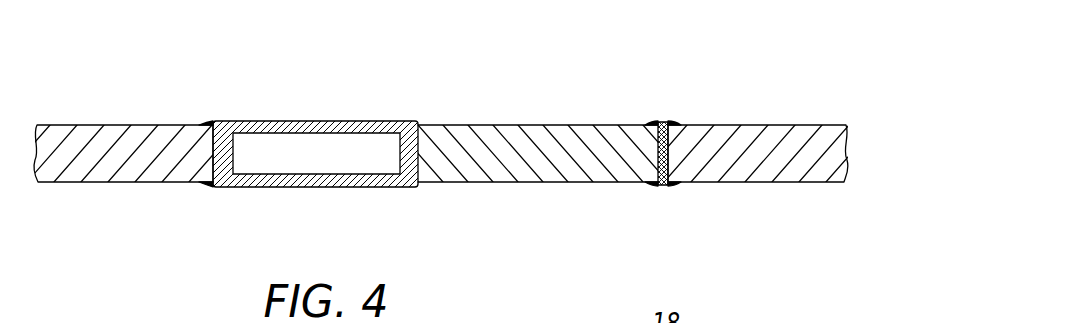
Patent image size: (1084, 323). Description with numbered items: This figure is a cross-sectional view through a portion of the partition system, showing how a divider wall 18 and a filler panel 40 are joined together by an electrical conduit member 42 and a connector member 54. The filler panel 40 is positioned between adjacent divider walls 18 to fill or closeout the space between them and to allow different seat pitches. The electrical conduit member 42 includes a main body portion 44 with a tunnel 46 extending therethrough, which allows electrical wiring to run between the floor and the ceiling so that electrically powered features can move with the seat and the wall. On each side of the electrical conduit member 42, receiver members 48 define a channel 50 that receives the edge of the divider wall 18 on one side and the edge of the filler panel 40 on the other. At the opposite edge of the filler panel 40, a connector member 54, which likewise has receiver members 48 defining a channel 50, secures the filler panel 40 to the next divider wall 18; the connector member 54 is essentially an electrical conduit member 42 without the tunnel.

The divider wall 18 is at (65, 129).
The filler panel 40 is at (540, 128).
The electrical conduit member 42 is at (319, 131).
The main body portion 44 is at (316, 120).
The tunnel 46 is at (260, 164).
The receiver members 48 is at (212, 121).
The channel 50 is at (213, 153).
The connector member 54 is at (660, 122).